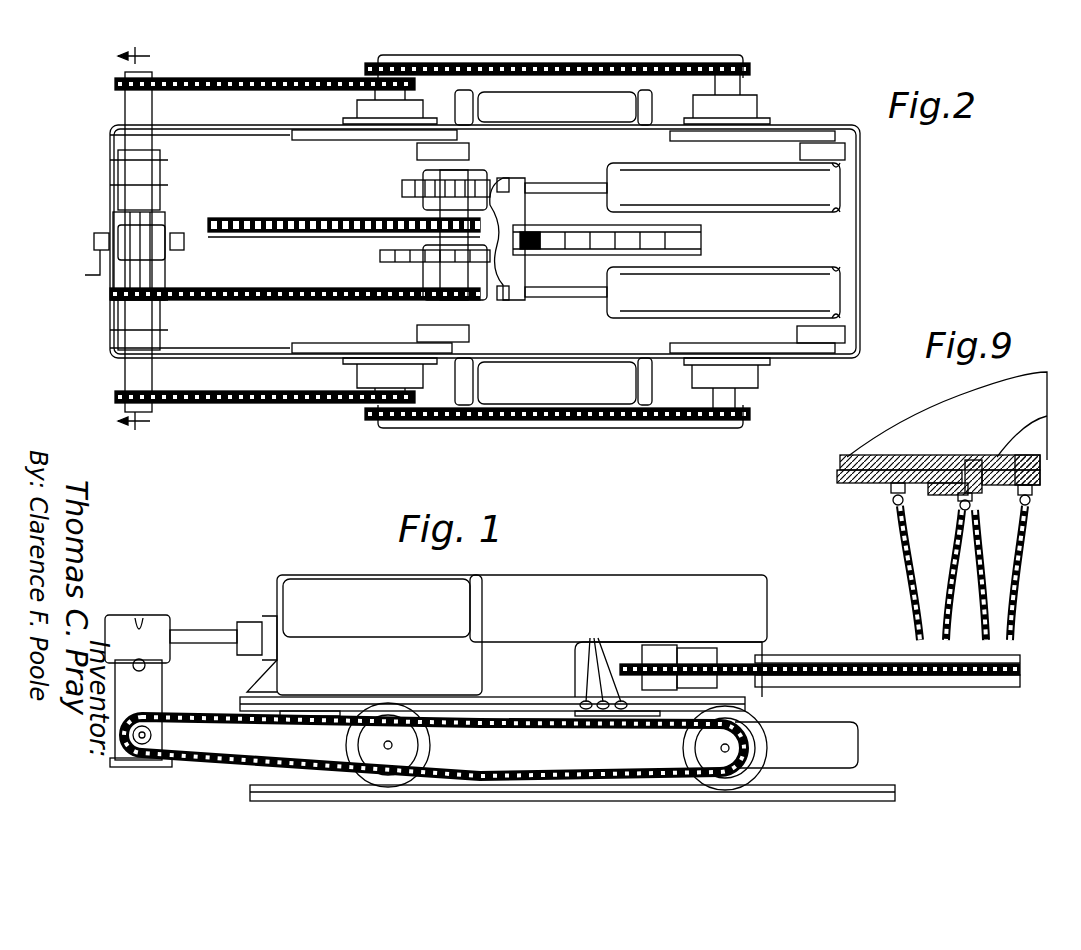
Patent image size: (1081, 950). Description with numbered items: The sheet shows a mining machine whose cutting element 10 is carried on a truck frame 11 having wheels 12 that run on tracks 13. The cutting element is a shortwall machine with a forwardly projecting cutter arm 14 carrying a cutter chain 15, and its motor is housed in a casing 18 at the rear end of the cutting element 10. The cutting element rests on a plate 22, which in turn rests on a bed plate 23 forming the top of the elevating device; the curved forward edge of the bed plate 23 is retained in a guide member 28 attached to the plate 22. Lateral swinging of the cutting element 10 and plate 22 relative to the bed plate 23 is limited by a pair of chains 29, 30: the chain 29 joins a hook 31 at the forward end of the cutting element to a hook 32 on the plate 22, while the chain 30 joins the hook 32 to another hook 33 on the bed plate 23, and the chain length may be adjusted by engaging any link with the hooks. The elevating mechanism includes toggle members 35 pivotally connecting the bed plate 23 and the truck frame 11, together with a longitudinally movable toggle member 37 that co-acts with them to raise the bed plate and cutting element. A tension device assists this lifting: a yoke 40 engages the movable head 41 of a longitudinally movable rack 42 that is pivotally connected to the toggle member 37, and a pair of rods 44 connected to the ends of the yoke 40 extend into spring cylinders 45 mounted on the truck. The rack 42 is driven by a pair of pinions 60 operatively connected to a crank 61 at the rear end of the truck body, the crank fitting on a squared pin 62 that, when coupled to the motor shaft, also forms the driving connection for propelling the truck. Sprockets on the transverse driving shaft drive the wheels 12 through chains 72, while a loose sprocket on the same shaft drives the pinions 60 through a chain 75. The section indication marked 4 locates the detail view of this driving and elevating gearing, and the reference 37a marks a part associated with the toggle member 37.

In FIG. 2, the section line 4- 4 is at (124, 239).
In FIG. 1, the cutting element 10 is at (618, 577).
In FIG. 9, the cutting element 10 is at (1047, 412).
In FIG. 2, the truck frame 11 is at (862, 246).
In FIG. 1, the truck frame 11 is at (858, 736).
In FIG. 2, the wheels 12 is at (357, 108).
In FIG. 1, the wheels 12 is at (345, 775).
In FIG. 1, the tracks 13 is at (895, 792).
In FIG. 1, the cutter arm 14 is at (866, 658).
In FIG. 1, the cutter chain 15 is at (955, 664).
In FIG. 1, the motor casing 18 is at (358, 635).
In FIG. 1, the plate 22 is at (530, 697).
In FIG. 9, the plate 22 is at (935, 455).
In FIG. 1, the bed plate 23 is at (492, 710).
In FIG. 9, the bed plate 23 is at (852, 483).
In FIG. 9, the guide member 28 is at (945, 495).
In FIG. 9, the chain 29 is at (975, 575).
In FIG. 9, the chain 30 is at (912, 548).
In FIG. 9, the hook 31 is at (982, 502).
In FIG. 9, the hook 32 is at (1032, 500).
In FIG. 9, the hook 33 is at (886, 497).
In FIG. 2, the toggle members 35 is at (346, 141).
In FIG. 2, the longitudinally movable toggle member 37 is at (571, 222).
In FIG. 1, the springs 37a is at (668, 660).
In FIG. 2, the yoke 40 is at (508, 178).
In FIG. 2, the movable head 41 is at (525, 242).
In FIG. 2, the rack 42 is at (290, 216).
In FIG. 2, the rods 44 is at (582, 180).
In FIG. 2, the cylinders 45 is at (723, 240).
In FIG. 2, the pinions 60 is at (425, 185).
In FIG. 2, the crank 61 is at (90, 270).
In FIG. 1, the squared pin 62 is at (204, 629).
In FIG. 2, the chains 72 is at (292, 74).
In FIG. 1, the chains 72 is at (215, 765).
In FIG. 2, the chain 75 is at (278, 302).